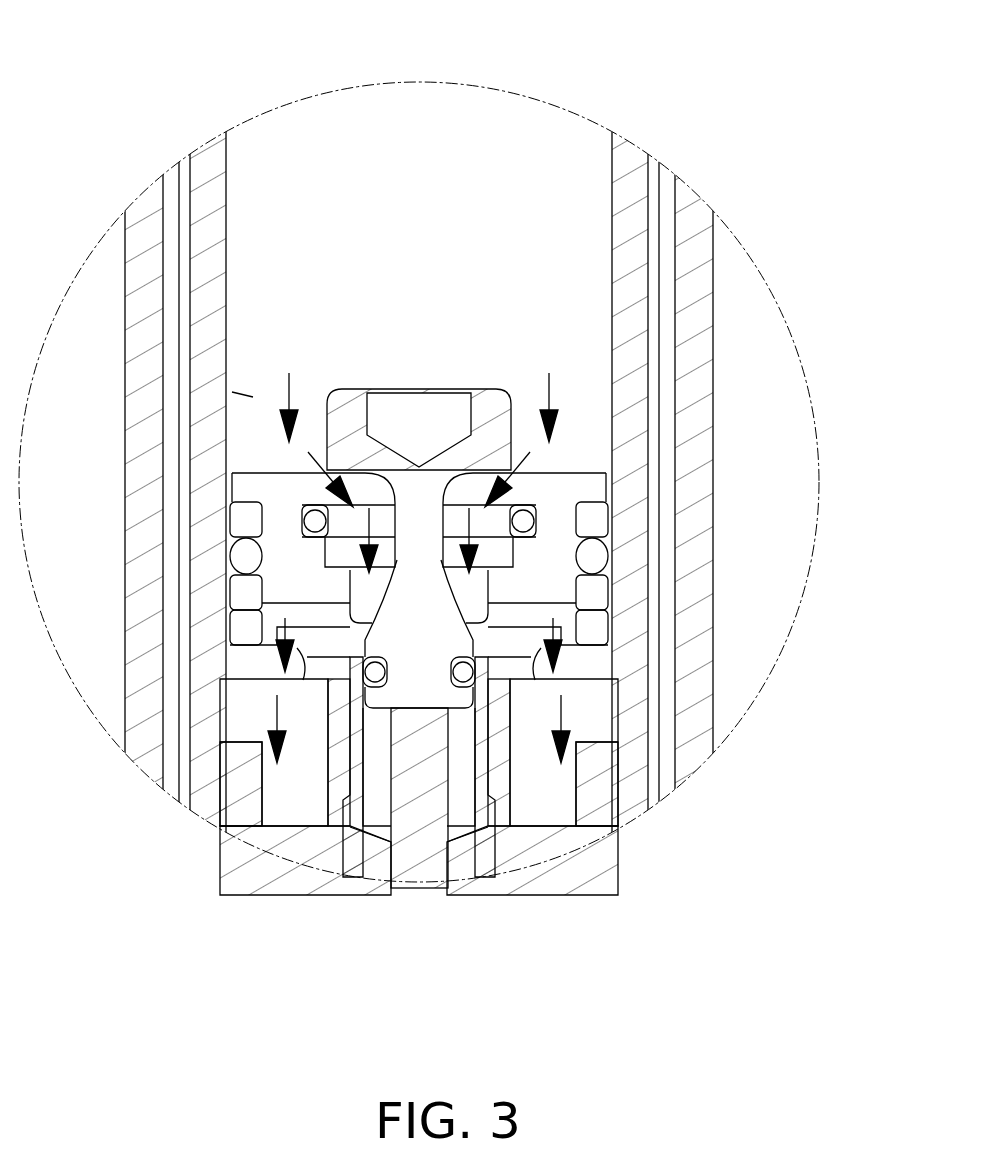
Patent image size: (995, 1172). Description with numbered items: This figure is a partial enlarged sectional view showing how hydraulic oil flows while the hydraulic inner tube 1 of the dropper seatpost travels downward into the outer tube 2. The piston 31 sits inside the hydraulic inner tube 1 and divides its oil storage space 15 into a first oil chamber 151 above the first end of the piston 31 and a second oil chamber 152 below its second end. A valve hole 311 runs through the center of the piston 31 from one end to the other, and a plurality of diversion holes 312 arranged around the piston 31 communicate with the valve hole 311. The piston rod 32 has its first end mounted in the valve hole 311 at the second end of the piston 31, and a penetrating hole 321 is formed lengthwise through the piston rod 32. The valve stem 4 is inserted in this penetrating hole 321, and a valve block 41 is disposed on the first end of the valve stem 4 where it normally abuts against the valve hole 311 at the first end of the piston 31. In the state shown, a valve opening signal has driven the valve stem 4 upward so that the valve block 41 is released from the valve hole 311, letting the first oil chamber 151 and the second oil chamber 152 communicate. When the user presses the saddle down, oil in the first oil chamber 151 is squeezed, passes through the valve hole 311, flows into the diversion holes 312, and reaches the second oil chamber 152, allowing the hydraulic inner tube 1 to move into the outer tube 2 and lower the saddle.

The hydraulic inner tube 1 is at (203, 200).
The outer tube 2 is at (686, 684).
The valve stem 4 is at (412, 858).
The oil storage space 15 is at (130, 898).
The first oil chamber 151 is at (232, 392).
The second oil chamber 152 is at (258, 663).
The piston 31 is at (566, 485).
The valve hole 311 is at (560, 553).
The diversion holes 312 is at (612, 582).
The piston rod 32 is at (480, 868).
The penetrating hole 321 is at (433, 882).
The valve block 41 is at (492, 432).